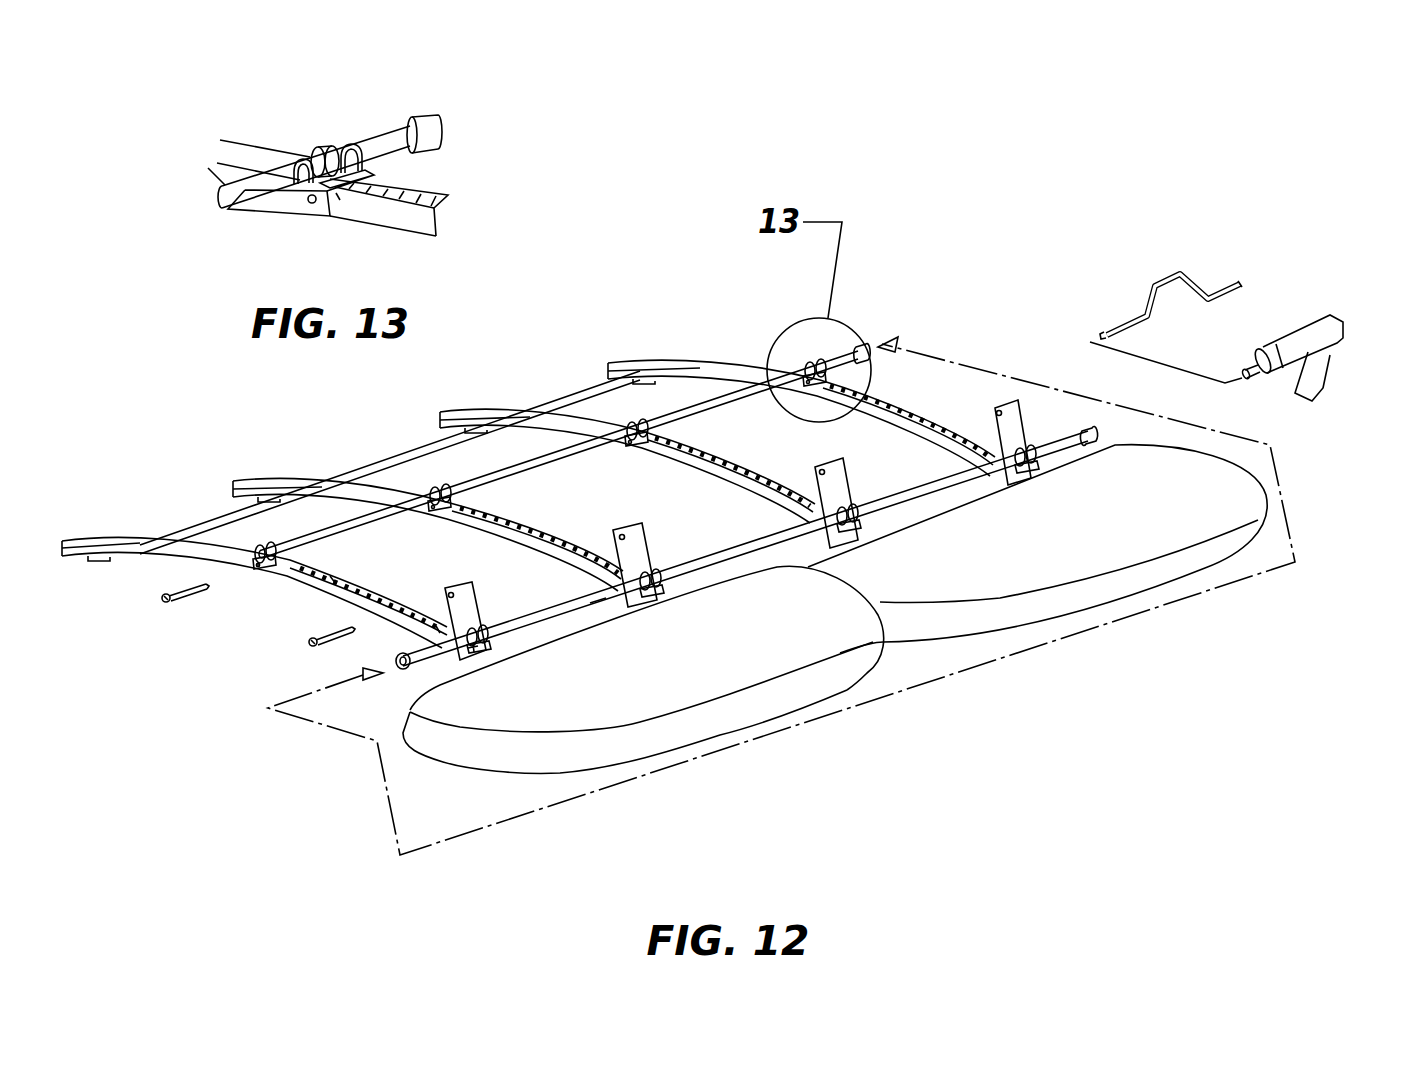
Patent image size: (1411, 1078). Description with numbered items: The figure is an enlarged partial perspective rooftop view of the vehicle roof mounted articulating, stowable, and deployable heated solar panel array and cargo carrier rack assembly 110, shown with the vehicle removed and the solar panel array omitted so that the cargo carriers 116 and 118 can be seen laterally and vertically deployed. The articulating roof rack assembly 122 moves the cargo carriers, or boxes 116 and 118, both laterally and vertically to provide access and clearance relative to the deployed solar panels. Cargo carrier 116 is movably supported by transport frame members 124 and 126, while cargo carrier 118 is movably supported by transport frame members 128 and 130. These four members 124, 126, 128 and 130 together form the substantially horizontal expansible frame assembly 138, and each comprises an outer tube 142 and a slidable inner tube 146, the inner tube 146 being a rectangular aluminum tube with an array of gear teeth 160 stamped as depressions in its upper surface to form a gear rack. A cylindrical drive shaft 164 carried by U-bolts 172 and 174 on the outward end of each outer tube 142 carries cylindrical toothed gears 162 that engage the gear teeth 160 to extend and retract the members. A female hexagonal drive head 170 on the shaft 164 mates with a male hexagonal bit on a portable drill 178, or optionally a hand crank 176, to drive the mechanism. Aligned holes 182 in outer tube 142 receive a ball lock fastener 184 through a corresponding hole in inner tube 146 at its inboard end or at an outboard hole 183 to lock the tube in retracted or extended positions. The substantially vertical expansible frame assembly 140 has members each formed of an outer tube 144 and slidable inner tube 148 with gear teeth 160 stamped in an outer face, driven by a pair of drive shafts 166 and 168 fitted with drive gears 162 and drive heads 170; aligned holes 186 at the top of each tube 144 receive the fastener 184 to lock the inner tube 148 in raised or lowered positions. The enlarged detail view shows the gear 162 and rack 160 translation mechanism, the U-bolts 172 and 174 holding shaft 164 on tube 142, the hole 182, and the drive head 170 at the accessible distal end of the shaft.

In FIG. 12, the articulating, stowable, and deployable heated solar panel array and cargo carrie 110 is at (1050, 184).
In FIG. 12, the cargo carrier 116 is at (643, 669).
In FIG. 12, the cargo carrier 118 is at (1037, 549).
In FIG. 12, the articulating roof rack assembly 122 is at (332, 737).
In FIG. 12, the transport frame member 124 is at (254, 598).
In FIG. 12, the transport frame member 126 is at (468, 526).
In FIG. 12, the transport frame member 128 is at (688, 459).
In FIG. 12, the transport frame member 130 is at (858, 411).
In FIG. 12, the substantially horizontal expansible frame assembly 138 is at (1038, 321).
In FIG. 12, the substantially vertical expansible frame assembly 140 is at (489, 613).
In FIG. 13, the outer tube 142 is at (278, 229).
In FIG. 12, the outer tube 142 is at (157, 560).
In FIG. 12, the outer tube 144 is at (480, 595).
In FIG. 13, the inner tube 146 is at (378, 226).
In FIG. 12, the inner tube 146 is at (340, 593).
In FIG. 12, the inner tube 148 is at (463, 655).
In FIG. 13, the gear teeth 160 is at (378, 207).
In FIG. 12, the gear teeth 160 is at (578, 543).
In FIG. 13, the cylindrical toothed gear 162 is at (318, 150).
In FIG. 12, the cylindrical toothed gear 162 is at (810, 366).
In FIG. 13, the cylindrical drive shaft 164 is at (230, 186).
In FIG. 12, the cylindrical drive shaft 164 is at (532, 457).
In FIG. 12, the drive shaft 166 is at (598, 600).
In FIG. 12, the drive shaft 168 is at (745, 548).
In FIG. 13, the female hexagonal drive head 170 is at (420, 116).
In FIG. 12, the female hexagonal drive head 170 is at (860, 350).
In FIG. 13, the U-bolt 172 is at (300, 162).
In FIG. 13, the U-bolt 174 is at (348, 146).
In FIG. 12, the hand crank 176 is at (1168, 277).
In FIG. 12, the portable drill 178 is at (1292, 335).
In FIG. 13, the hole 182 is at (310, 203).
In FIG. 12, the hole 182 is at (263, 570).
In FIG. 12, the hole 183 is at (440, 620).
In FIG. 12, the ball lock fastener 184 is at (170, 602).
In FIG. 12, the hole 186 is at (420, 595).